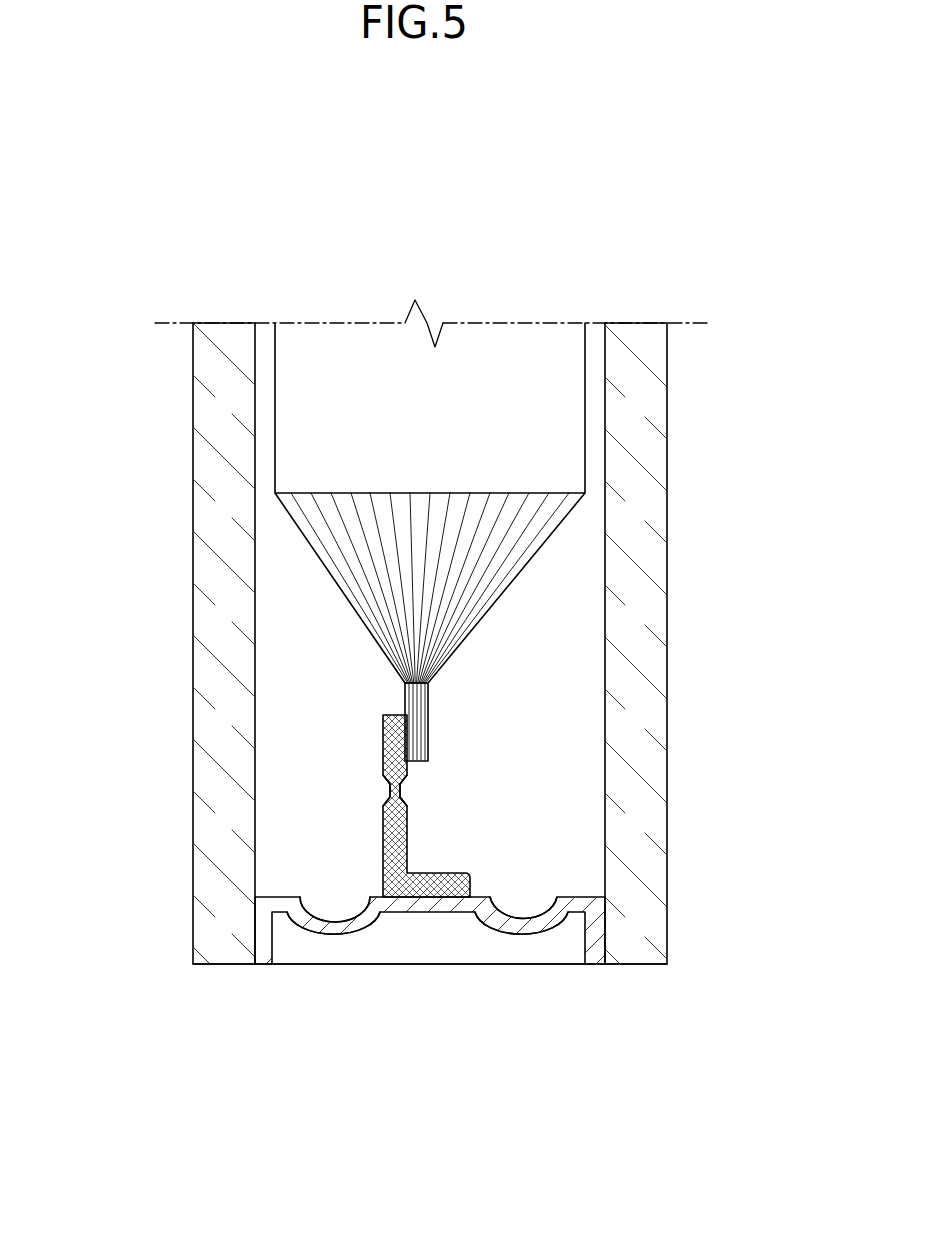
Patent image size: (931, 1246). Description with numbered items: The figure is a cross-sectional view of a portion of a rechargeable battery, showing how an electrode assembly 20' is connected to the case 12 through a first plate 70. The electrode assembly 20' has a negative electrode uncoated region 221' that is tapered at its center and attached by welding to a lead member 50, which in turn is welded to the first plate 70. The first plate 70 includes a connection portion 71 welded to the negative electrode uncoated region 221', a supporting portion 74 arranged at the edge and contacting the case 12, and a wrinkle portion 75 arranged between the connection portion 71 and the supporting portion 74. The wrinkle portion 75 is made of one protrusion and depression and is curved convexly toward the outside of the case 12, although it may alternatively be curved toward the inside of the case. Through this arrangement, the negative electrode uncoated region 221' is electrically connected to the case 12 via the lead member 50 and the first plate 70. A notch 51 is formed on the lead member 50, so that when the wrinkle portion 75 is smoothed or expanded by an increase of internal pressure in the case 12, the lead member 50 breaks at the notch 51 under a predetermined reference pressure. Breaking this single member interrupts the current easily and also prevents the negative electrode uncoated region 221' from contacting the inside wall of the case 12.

The case 12 is at (635, 616).
The electrode assembly 20' is at (335, 503).
The negative electrode uncoated region 221' is at (536, 627).
The lead member 50 is at (385, 843).
The notch 51 is at (390, 790).
The first plate 70 is at (597, 981).
The connection portion 71 is at (443, 964).
The supporting portion 74 is at (295, 964).
The wrinkle portion 75 is at (530, 964).